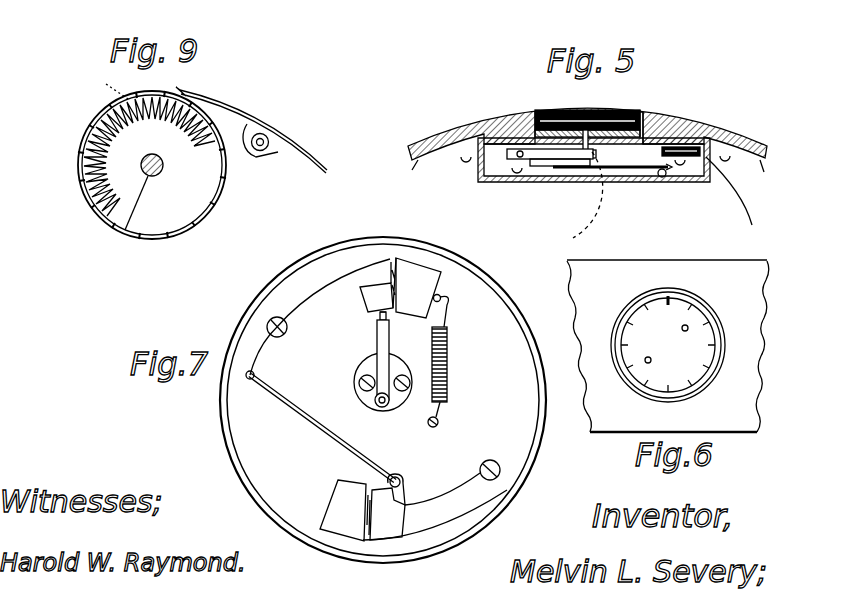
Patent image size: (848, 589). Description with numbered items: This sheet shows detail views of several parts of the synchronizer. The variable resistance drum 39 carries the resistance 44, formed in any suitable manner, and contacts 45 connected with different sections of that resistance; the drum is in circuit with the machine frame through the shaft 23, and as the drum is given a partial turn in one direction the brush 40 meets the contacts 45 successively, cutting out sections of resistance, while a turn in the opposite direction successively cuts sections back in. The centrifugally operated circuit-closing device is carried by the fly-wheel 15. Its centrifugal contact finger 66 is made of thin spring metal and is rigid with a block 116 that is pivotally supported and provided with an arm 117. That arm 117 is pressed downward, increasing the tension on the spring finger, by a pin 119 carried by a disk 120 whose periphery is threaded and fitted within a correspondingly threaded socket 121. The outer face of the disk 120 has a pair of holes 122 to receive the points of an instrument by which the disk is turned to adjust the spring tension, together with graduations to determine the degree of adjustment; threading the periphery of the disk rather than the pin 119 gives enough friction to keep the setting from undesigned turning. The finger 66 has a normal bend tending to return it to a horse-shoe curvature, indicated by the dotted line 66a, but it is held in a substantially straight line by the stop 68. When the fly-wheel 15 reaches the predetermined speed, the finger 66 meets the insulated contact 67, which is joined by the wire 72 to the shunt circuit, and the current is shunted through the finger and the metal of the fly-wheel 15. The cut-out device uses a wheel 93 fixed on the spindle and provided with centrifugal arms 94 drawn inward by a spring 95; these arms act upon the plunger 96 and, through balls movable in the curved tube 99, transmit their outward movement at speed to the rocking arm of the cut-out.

In FIG. 5, the fly-wheel 15 is at (442, 133).
In FIG. 6, the fly-wheel 15 is at (612, 433).
In FIG. 9, the shaft 23 is at (154, 177).
In FIG. 9, the variable resistance drum 39 is at (134, 165).
In FIG. 9, the brush 40 is at (235, 110).
In FIG. 9, the resistance 44 is at (112, 113).
In FIG. 9, the contacts 45 is at (103, 85).
In FIG. 5, the centrifugal contact finger 66 is at (638, 170).
In FIG. 5, the curved shape of contact finger 66a is at (563, 200).
In FIG. 5, the insulated contact 67 is at (672, 147).
In FIG. 5, the stop 68 is at (663, 178).
In FIG. 5, the wire 72 is at (735, 191).
In FIG. 7, the wheel 93 is at (224, 437).
In FIG. 7, the centrifugal arms 94 is at (347, 283).
In FIG. 7, the spring 95 is at (449, 362).
In FIG. 7, the plunger 96 is at (381, 314).
In FIG. 7, the curved tube 99 is at (391, 338).
In FIG. 5, the block 116 is at (516, 158).
In FIG. 5, the arm 117 is at (558, 160).
In FIG. 5, the pin 119 is at (592, 150).
In FIG. 5, the disk 120 is at (548, 118).
In FIG. 6, the disk 120 is at (648, 322).
In FIG. 5, the threaded socket 121 is at (632, 118).
In FIG. 6, the threaded socket 121 is at (706, 318).
In FIG. 6, the holes 122 is at (685, 332).